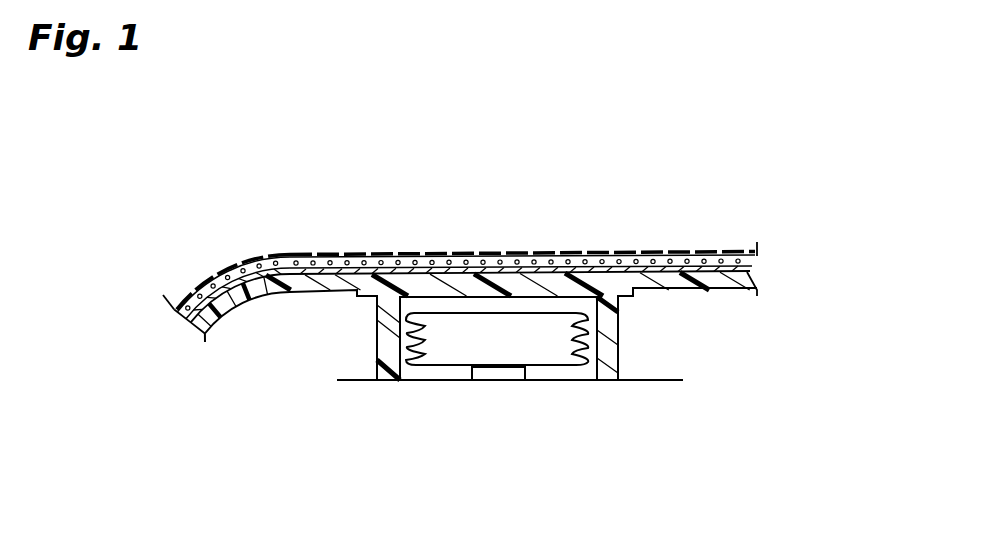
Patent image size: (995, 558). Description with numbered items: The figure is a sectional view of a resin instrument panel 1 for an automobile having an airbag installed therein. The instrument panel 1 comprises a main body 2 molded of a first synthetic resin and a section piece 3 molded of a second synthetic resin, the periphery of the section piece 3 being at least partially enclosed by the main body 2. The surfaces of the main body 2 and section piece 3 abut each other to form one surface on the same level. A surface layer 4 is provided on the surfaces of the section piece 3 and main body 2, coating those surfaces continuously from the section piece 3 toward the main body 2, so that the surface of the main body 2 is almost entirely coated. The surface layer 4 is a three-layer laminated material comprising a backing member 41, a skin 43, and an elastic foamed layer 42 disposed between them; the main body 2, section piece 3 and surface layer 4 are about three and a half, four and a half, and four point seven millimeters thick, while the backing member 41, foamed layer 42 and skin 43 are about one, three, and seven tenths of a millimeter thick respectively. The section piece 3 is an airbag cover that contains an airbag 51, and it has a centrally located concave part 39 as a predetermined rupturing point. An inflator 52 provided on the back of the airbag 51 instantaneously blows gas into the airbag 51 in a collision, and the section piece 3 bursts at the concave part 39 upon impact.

The instrument panel 1 is at (556, 126).
The main body 2 is at (303, 286).
The section piece 3 is at (412, 287).
The surface layer 4 is at (774, 196).
The concave part 39 is at (500, 287).
The backing member 41 is at (654, 269).
The elastic foamed layer 42 is at (692, 263).
The skin 43 is at (743, 254).
The airbag 51 is at (533, 340).
The inflator 52 is at (503, 369).